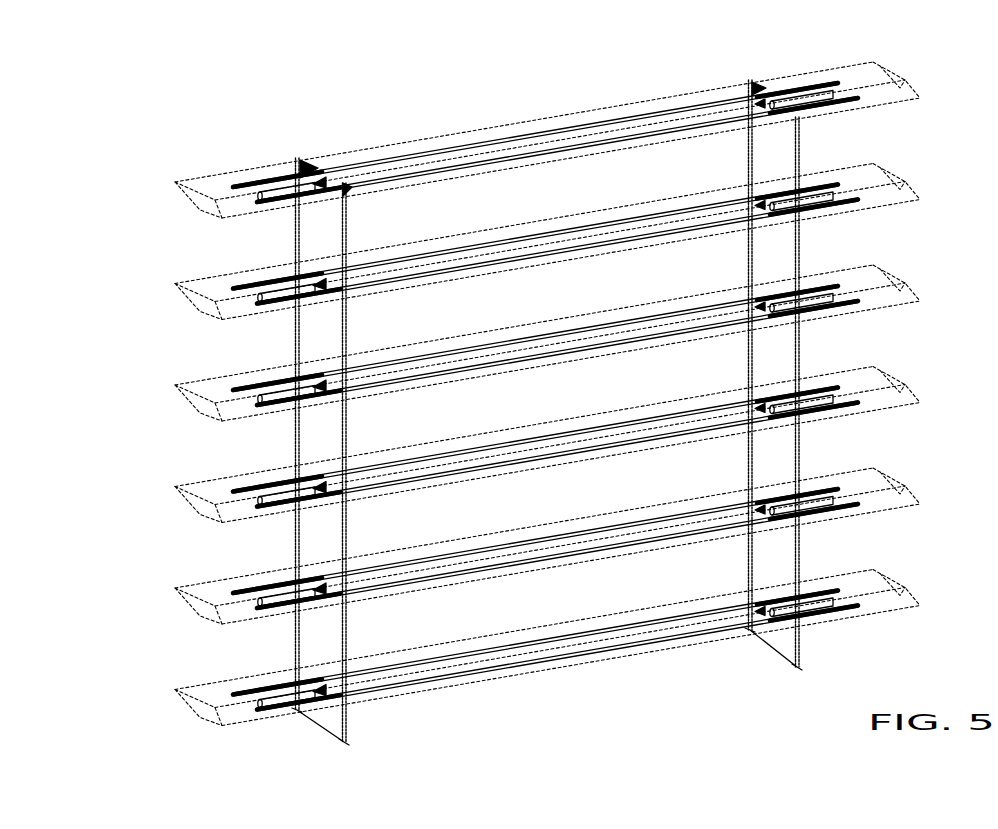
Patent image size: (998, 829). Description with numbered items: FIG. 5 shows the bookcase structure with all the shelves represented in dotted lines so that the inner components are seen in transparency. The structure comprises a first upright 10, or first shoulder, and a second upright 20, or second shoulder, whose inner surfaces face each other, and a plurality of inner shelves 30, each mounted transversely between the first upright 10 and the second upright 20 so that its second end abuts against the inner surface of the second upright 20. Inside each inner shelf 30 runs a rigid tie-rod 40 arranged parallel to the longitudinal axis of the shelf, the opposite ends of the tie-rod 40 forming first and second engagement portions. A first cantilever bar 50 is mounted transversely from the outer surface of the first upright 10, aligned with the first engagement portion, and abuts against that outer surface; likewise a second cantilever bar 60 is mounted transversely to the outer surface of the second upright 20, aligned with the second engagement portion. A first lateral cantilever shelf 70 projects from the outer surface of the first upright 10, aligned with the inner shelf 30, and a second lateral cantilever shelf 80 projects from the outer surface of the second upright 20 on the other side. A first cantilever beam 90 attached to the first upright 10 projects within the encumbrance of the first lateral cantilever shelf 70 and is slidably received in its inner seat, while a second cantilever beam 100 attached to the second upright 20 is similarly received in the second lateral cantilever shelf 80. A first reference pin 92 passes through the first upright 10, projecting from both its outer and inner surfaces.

The first upright 10 is at (305, 249).
The second upright 20 is at (792, 143).
The inner shelf 30 is at (570, 114).
The rigid tie-rod 40 is at (468, 145).
The first cantilever bar 50 is at (243, 180).
The second cantilever bar 60 is at (840, 76).
The first lateral cantilever shelf 70 is at (215, 185).
The second lateral cantilever shelf 80 is at (905, 80).
The first cantilever beam 90 is at (287, 178).
The first reference pin 92 is at (312, 165).
The second cantilever beam 100 is at (805, 88).